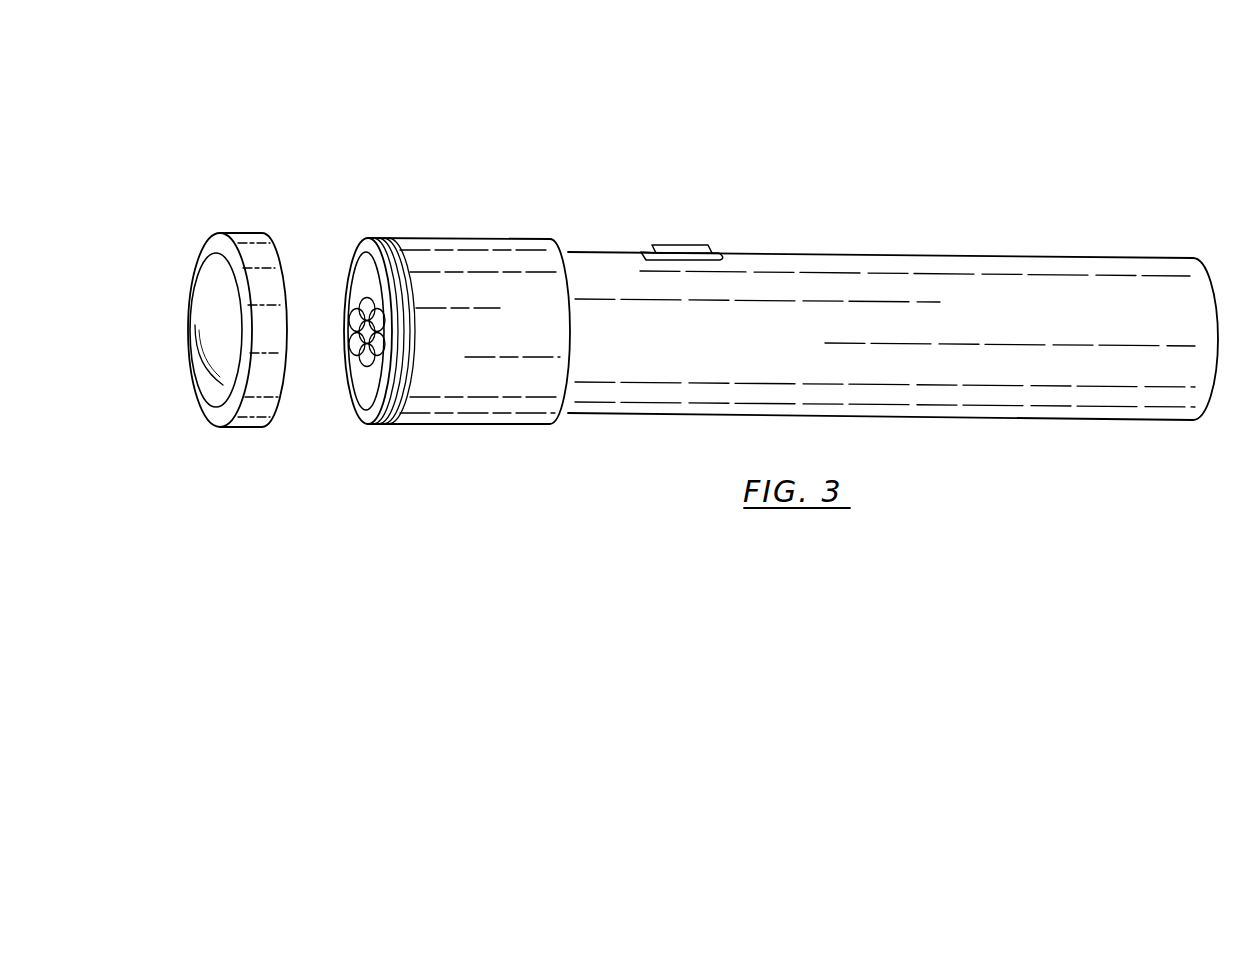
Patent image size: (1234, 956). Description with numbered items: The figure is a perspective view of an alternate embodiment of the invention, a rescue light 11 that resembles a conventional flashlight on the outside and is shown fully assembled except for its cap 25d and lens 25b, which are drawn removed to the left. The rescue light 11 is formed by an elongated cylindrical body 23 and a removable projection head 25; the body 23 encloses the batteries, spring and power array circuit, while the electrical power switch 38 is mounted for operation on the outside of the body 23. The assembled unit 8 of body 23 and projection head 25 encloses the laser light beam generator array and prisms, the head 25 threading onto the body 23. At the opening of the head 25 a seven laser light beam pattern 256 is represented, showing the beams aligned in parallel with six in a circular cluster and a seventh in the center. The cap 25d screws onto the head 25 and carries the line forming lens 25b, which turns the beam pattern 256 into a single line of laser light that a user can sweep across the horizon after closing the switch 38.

The rescue light 11 is at (892, 97).
The body assembly 8 is at (876, 230).
The body 23 is at (1008, 290).
The projection head 25 is at (457, 258).
The projection lens 25b is at (200, 307).
The cap 25d is at (247, 242).
The seven laser light beam pattern 256 is at (360, 332).
The electrical power switch 38 is at (682, 245).